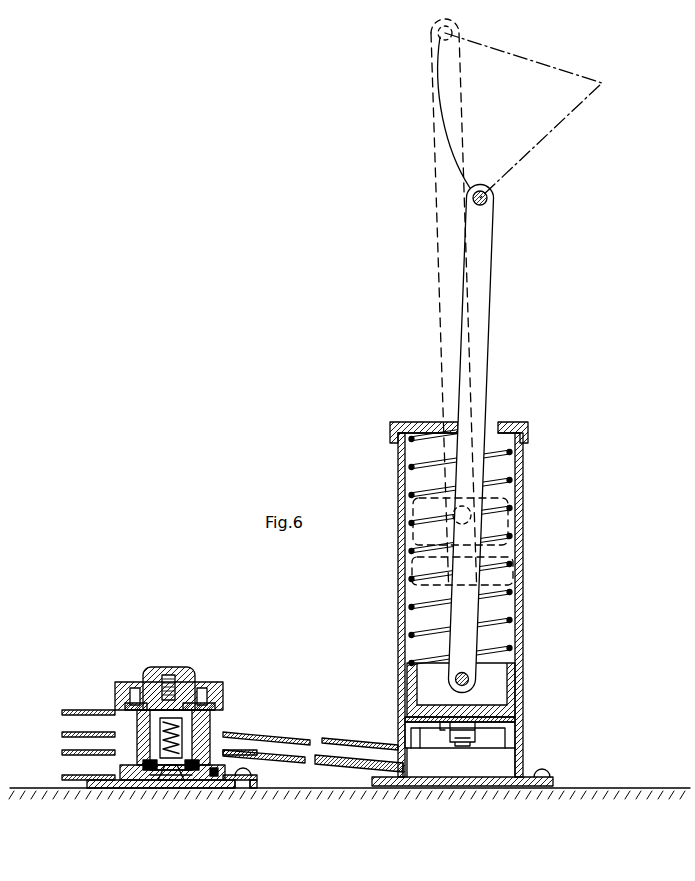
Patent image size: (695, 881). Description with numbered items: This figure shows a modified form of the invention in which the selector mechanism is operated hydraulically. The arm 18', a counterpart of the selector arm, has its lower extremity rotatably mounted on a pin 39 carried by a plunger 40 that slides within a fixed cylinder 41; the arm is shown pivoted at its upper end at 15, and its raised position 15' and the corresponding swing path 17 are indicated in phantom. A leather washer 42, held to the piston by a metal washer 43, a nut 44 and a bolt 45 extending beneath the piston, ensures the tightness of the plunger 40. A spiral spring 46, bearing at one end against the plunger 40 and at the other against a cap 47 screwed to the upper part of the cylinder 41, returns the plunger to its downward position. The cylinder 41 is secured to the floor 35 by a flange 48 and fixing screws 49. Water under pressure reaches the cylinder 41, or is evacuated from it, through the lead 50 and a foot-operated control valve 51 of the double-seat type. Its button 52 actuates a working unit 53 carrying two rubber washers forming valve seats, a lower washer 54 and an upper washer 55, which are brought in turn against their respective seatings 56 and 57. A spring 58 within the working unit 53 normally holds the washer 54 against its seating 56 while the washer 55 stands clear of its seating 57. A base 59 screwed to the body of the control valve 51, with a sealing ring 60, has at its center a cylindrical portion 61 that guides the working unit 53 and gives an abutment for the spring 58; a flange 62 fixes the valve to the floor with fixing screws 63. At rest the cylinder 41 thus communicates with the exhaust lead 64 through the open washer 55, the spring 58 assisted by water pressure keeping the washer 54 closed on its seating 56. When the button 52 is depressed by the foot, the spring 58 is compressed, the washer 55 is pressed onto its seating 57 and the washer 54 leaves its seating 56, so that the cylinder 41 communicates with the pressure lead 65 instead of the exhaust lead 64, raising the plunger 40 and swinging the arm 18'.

The pivot pin 15 is at (503, 195).
The pivot pin in raised position 15' is at (437, 302).
The swing path lines 17 is at (602, 83).
The arm 18' is at (493, 438).
The floor 35 is at (306, 787).
The pin 39 is at (464, 678).
The plunger 40 is at (524, 683).
The fixed cylinder 41 is at (492, 760).
The leather washer 42 is at (420, 732).
The metal washer 43 is at (443, 730).
The nut 44 is at (480, 733).
The bolt 45 is at (465, 740).
The spiral spring 46 is at (516, 501).
The cap 47 is at (526, 424).
The flange 48 is at (555, 780).
The fixing screws 49 is at (546, 771).
The lead 50 is at (340, 740).
The control valve 51 is at (221, 691).
The button 52 is at (178, 668).
The working unit 53 is at (200, 781).
The washer 54 is at (140, 780).
The washer 55 is at (122, 717).
The seating 56 is at (135, 757).
The seating 57 is at (226, 719).
The spring 58 is at (160, 778).
The base 59 is at (190, 783).
The sealing ring 60 is at (220, 782).
The cylindrical portion 61 is at (170, 780).
The flange 62 is at (253, 783).
The fixing screws 63 is at (246, 774).
The exhaust lead 64 is at (80, 714).
The pressure lead 65 is at (78, 763).